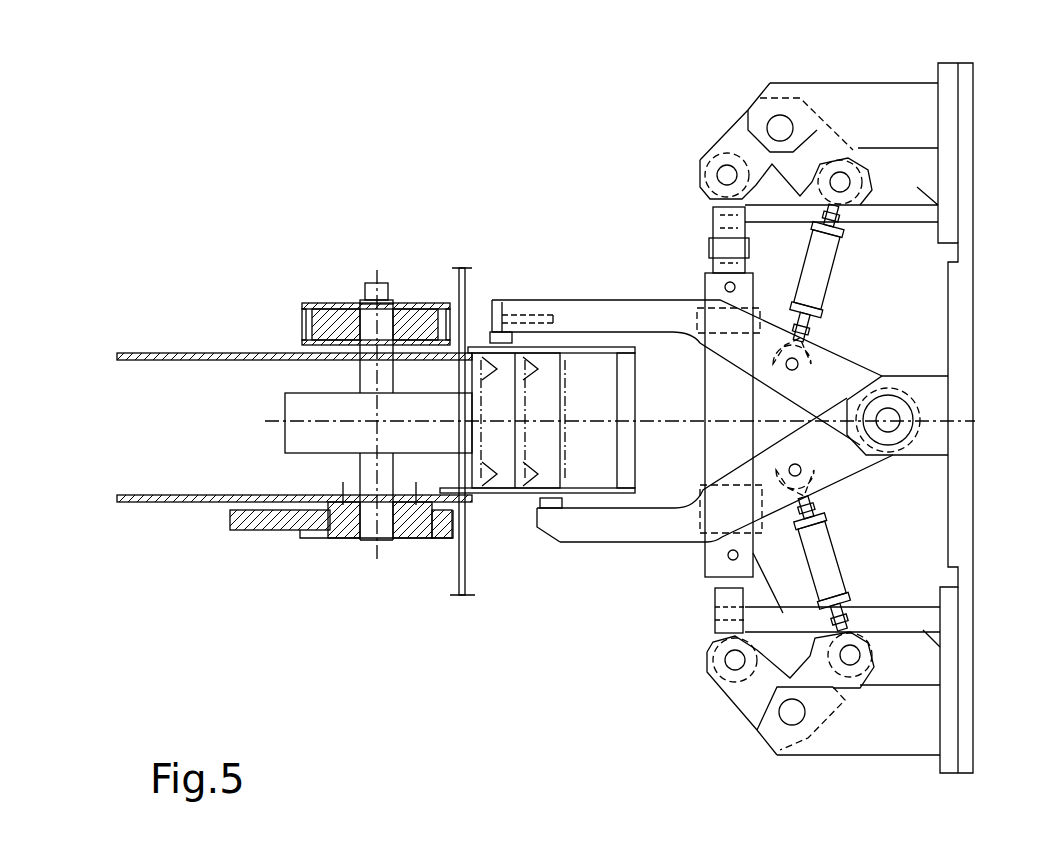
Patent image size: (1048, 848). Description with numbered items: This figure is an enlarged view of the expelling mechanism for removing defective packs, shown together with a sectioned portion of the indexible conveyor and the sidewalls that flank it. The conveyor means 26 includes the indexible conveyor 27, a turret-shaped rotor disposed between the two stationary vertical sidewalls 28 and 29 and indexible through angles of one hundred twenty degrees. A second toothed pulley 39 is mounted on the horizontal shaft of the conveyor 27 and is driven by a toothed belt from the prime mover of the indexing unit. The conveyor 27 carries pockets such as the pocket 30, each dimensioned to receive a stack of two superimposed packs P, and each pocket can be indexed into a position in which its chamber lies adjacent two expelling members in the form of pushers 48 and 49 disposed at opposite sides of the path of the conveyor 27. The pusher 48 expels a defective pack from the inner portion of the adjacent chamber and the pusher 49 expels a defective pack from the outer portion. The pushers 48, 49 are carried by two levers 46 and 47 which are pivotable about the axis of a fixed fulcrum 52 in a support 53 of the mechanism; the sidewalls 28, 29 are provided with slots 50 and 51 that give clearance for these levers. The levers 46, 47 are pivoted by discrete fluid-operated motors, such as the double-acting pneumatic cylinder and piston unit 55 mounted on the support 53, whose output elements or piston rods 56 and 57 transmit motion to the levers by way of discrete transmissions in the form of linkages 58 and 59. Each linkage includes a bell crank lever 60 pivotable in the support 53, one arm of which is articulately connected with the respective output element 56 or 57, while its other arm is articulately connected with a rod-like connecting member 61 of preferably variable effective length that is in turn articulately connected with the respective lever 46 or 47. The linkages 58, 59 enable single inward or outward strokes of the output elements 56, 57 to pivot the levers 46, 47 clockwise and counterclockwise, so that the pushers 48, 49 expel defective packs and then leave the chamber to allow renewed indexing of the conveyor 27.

The conveyor means 26 is at (257, 534).
The indexible conveyor 27 is at (290, 410).
The sidewall 28 is at (158, 503).
The sidewall 29 is at (160, 354).
The pocket 30 is at (576, 462).
The second toothed pulley 39 is at (410, 304).
The lever 46 is at (615, 526).
The lever 47 is at (602, 305).
The pusher 48 is at (540, 505).
The pusher 49 is at (488, 334).
The slot 50 is at (490, 495).
The slot 51 is at (625, 347).
The fixed fulcrum 52 is at (888, 420).
The support 53 is at (968, 485).
The fluid-operated motor 55 is at (724, 388).
The output element 56 is at (738, 600).
The output element 57 is at (712, 212).
The linkage 58 is at (726, 717).
The linkage 59 is at (730, 103).
The bell crank lever 60 is at (720, 142).
The connecting member 61 is at (822, 275).
The pack P is at (546, 378).